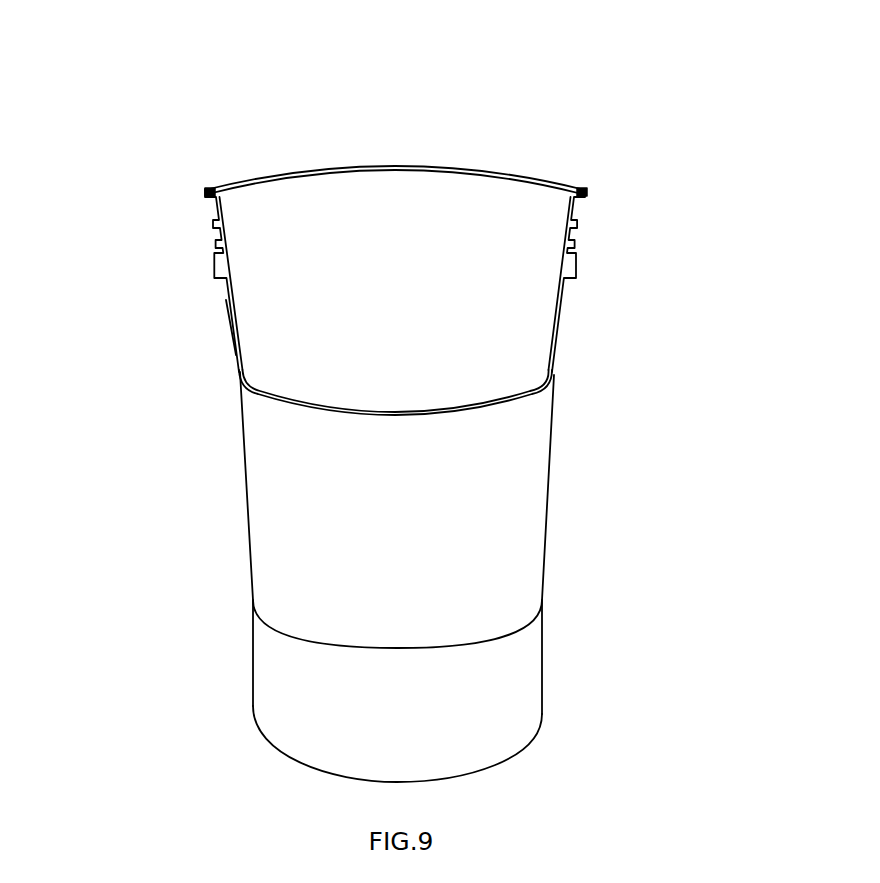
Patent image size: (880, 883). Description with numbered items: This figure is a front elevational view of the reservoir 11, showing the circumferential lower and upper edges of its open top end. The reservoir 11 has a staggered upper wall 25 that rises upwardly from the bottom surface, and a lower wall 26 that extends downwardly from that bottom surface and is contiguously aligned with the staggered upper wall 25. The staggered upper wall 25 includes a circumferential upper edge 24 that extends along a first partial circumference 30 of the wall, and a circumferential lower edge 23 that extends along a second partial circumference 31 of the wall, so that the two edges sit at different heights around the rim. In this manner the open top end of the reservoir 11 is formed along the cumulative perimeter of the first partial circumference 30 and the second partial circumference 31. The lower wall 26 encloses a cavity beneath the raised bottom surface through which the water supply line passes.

The reservoir 11 is at (570, 526).
The circumferential lower edge 23 is at (300, 403).
The circumferential upper edge 24 is at (327, 168).
The staggered upper wall 25 is at (522, 332).
The lower wall 26 is at (505, 720).
The first partial circumference 30 is at (592, 183).
The second partial circumference 31 is at (221, 353).